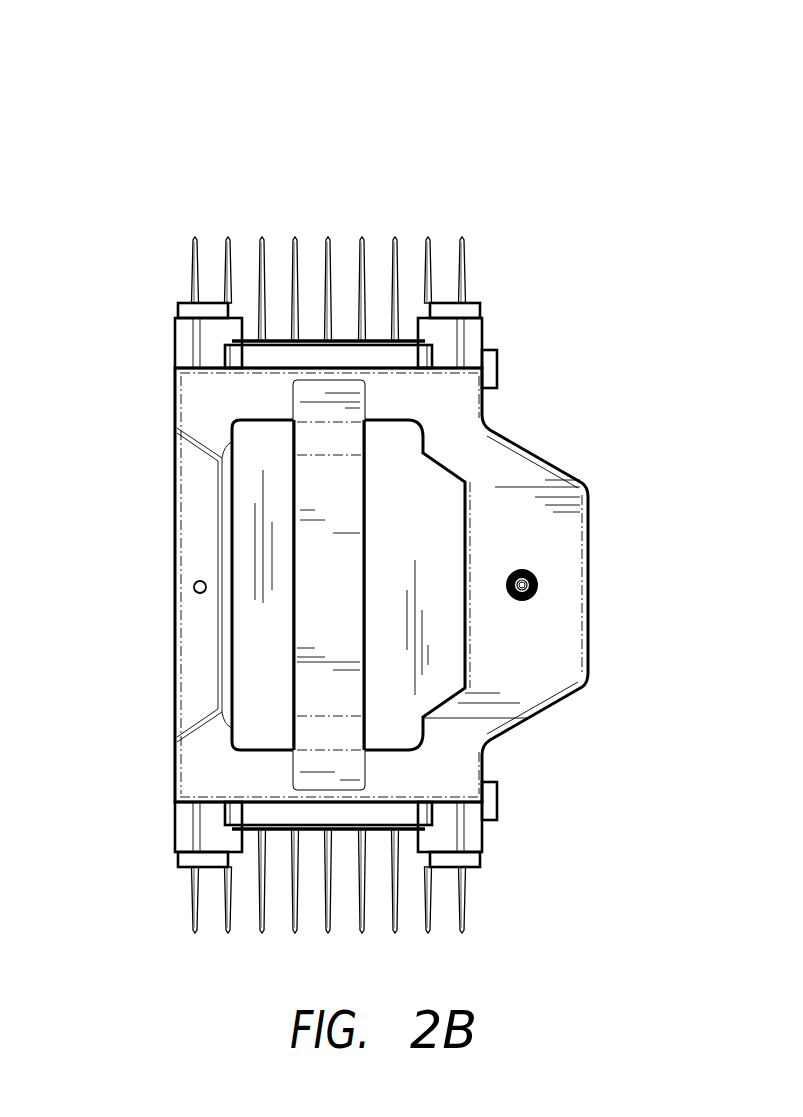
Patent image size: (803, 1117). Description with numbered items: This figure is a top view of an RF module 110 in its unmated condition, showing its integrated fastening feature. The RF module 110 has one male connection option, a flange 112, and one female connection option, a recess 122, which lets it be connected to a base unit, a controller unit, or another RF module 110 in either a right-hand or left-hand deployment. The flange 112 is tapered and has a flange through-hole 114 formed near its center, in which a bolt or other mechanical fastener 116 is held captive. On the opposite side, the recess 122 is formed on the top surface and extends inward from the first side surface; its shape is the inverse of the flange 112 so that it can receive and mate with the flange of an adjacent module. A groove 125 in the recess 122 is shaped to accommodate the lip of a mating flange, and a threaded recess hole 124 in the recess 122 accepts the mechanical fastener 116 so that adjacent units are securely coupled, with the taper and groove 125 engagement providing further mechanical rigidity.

The RF module 110 is at (447, 133).
The flange 112 is at (557, 652).
The flange through-hole 114 is at (538, 585).
The mechanical fastener 116 is at (522, 569).
The recess 122 is at (150, 420).
The threaded recess hole 124 is at (193, 590).
The groove 125 is at (250, 442).